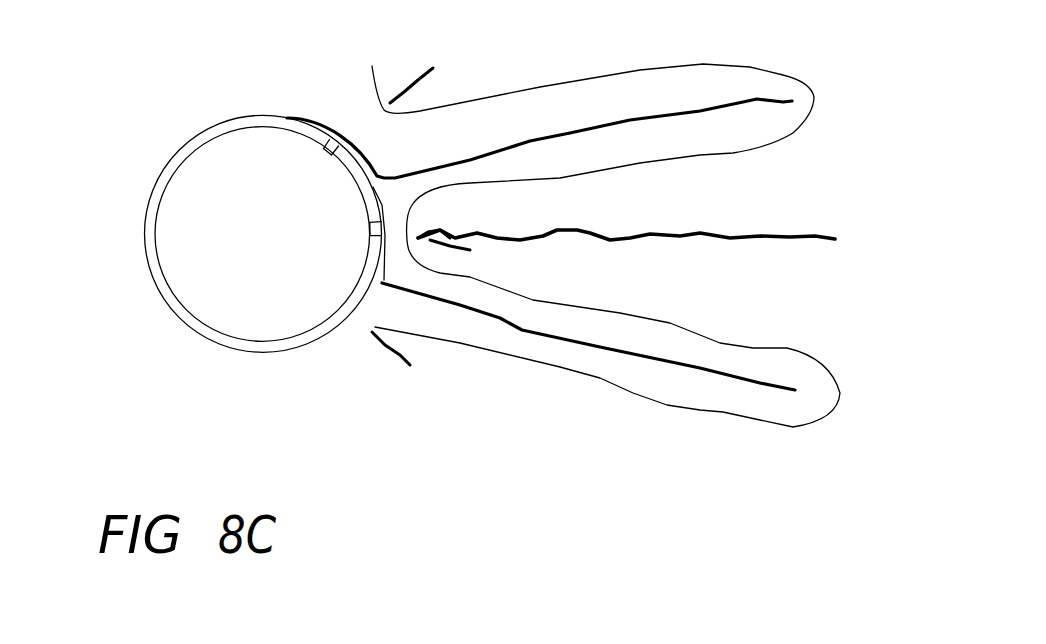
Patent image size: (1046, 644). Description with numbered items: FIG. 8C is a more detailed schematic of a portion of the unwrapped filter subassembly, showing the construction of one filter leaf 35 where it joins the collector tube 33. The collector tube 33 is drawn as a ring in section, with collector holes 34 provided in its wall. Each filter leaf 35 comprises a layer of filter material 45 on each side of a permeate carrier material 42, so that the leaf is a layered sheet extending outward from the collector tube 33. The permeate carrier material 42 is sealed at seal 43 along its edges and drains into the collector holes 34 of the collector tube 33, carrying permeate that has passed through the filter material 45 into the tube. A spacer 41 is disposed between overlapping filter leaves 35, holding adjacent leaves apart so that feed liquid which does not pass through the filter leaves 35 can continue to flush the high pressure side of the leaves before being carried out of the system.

The collector tube 33 is at (146, 202).
The collector holes 34 is at (323, 152).
The filter leaf 35 is at (828, 350).
The spacer 41 is at (775, 235).
The permeate carrier material 42 is at (789, 101).
The seal 43 is at (433, 68).
The filter material 45 is at (724, 411).